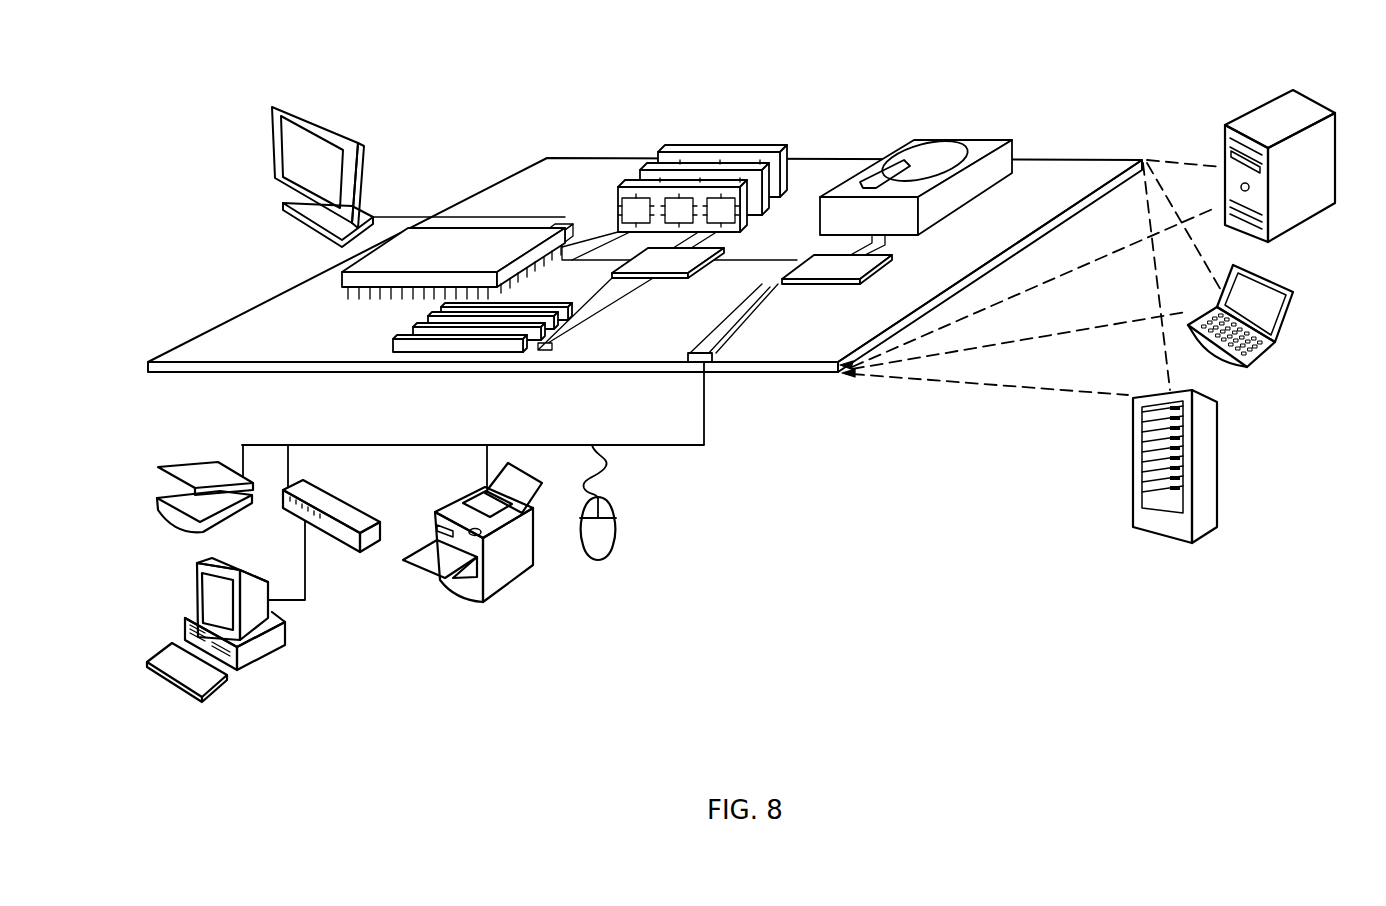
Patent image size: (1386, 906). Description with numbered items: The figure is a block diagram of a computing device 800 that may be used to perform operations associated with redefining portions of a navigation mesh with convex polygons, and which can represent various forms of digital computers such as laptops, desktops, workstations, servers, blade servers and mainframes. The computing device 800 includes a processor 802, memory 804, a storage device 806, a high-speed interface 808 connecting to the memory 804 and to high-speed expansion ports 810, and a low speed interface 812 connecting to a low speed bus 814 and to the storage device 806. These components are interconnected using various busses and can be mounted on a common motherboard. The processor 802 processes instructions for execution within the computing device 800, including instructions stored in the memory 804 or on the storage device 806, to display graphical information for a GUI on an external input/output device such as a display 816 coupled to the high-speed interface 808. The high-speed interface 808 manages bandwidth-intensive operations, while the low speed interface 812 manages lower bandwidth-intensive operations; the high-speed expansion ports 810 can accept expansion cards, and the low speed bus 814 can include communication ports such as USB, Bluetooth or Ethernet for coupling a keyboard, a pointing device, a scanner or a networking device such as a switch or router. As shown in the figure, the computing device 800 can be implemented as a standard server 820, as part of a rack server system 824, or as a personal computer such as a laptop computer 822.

The computing device 800 is at (468, 126).
The processor 802 is at (348, 277).
The memory 804 is at (675, 150).
The storage device 806 is at (910, 140).
The high-speed interface 808 is at (647, 258).
The high-speed expansion ports 810 is at (420, 334).
The low speed interface 812 is at (822, 263).
The low-speed expansion port 814 is at (715, 364).
The display 816 is at (278, 103).
The standard server 820 is at (1224, 144).
The laptop computer 822 is at (1290, 291).
The rack server system 824 is at (1130, 488).